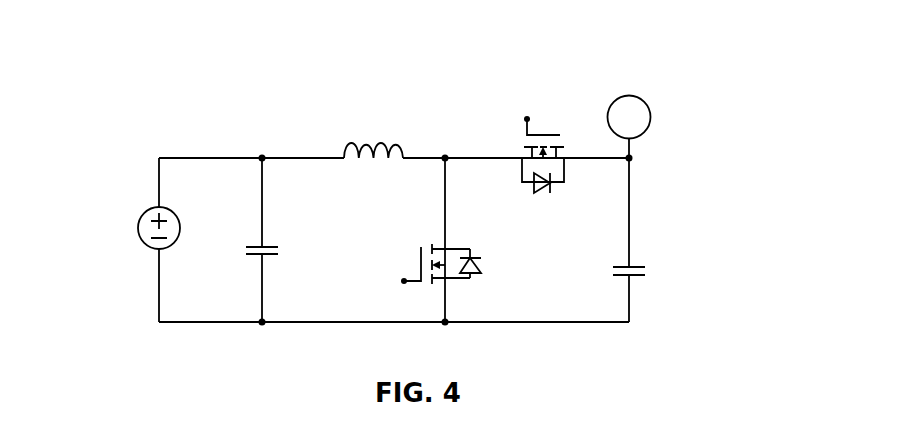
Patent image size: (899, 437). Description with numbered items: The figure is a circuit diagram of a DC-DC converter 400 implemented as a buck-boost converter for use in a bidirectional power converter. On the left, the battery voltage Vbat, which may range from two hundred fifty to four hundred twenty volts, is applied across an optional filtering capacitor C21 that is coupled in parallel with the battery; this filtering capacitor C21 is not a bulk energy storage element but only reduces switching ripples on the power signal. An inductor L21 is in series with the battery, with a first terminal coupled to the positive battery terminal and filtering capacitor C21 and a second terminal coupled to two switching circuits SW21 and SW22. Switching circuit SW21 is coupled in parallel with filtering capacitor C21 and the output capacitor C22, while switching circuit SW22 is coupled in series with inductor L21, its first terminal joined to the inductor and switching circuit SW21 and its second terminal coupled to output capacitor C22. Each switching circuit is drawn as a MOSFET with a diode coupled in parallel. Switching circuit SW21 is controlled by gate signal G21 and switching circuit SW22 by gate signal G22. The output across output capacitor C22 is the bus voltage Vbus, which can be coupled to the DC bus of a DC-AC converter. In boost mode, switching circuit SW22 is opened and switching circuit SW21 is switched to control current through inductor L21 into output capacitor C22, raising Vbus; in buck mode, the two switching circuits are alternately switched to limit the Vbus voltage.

The DC-DC converter 400 is at (705, 55).
The battery voltage Vbat is at (106, 235).
The filtering capacitor C21 is at (281, 251).
The inductor L21 is at (373, 132).
The switching circuit SW21 is at (468, 276).
The gate signal G21 is at (386, 268).
The switching circuit SW22 is at (538, 184).
The gate signal G22 is at (534, 111).
The Vbus voltage Vbus is at (630, 104).
The output capacitor C22 is at (650, 273).